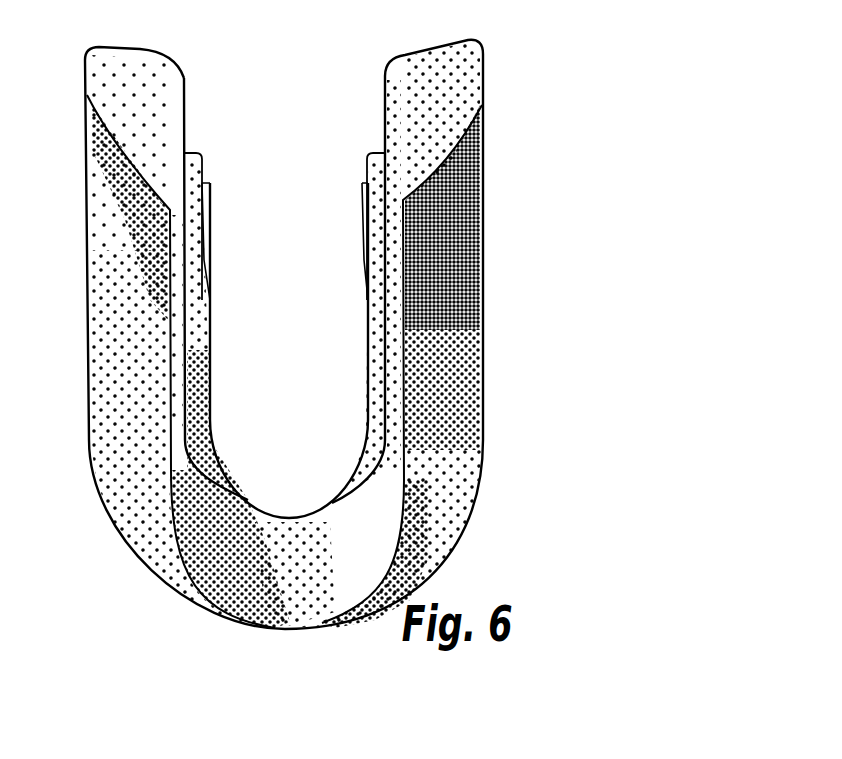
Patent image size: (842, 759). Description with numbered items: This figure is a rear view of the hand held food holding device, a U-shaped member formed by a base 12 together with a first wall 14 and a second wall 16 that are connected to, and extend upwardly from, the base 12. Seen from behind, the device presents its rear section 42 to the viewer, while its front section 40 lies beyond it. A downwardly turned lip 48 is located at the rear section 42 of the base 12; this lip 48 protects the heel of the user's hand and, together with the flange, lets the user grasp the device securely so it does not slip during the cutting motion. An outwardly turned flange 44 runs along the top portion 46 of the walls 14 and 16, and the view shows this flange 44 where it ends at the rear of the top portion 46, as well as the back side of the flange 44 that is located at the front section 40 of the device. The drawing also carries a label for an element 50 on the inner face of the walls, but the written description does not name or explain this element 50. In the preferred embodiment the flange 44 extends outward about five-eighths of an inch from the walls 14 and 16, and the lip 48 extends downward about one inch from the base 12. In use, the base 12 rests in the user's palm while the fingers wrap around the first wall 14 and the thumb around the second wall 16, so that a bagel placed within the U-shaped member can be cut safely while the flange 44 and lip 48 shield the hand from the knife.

The base 12 is at (287, 506).
The first wall 14 is at (196, 118).
The second wall 16 is at (374, 108).
The front section 40 is at (86, 212).
The rear section 42 is at (332, 572).
The outwardly turned flange 44 is at (137, 66).
The top portion 46 is at (385, 72).
The downwardly turned lip 48 is at (287, 595).
The rib 50 is at (362, 238).